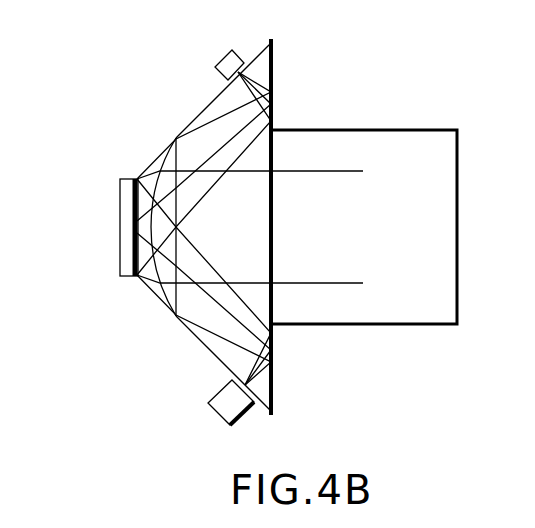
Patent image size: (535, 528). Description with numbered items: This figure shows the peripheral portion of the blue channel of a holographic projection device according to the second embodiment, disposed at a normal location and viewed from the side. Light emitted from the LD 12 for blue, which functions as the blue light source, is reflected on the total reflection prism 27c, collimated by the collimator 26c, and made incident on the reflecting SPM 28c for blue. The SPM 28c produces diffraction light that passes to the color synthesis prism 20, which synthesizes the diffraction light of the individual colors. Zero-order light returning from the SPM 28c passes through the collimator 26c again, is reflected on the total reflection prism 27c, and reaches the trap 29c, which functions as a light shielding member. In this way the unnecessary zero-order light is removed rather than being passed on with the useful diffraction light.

The LD for blue 12 is at (209, 412).
The color synthesis prism 20 is at (393, 130).
The collimator 26c is at (174, 298).
The total reflection prism 27c is at (203, 107).
The SPM for blue 28c is at (120, 230).
The trap 29c is at (216, 62).